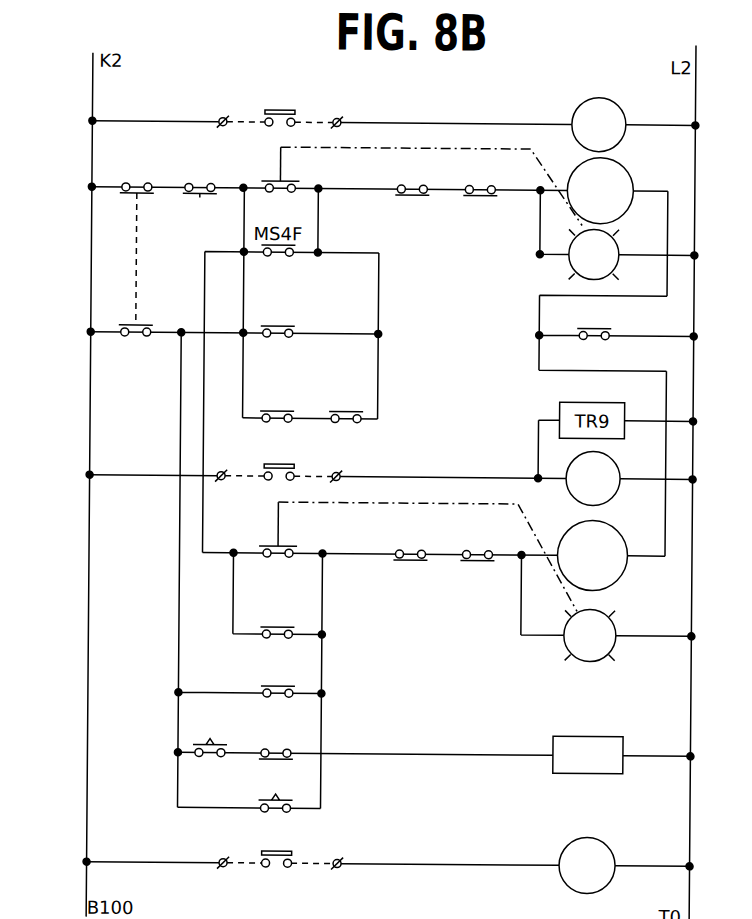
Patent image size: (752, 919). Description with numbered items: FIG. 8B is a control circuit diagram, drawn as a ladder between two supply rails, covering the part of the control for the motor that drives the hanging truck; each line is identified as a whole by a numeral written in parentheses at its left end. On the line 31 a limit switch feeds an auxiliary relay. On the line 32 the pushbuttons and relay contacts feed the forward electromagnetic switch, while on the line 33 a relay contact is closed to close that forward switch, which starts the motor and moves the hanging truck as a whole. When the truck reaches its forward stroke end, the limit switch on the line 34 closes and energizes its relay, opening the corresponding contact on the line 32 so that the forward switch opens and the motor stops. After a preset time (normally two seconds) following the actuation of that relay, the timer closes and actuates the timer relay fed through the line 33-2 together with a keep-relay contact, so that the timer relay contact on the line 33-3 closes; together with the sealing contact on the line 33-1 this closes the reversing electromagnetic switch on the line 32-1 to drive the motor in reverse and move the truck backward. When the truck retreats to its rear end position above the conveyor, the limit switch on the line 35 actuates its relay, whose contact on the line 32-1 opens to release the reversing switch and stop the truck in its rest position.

The line 31 is at (370, 119).
The line 32 is at (369, 237).
The line 33 is at (367, 423).
The line 34 is at (368, 473).
The line 32-1 is at (354, 655).
The line 33-1 is at (170, 569).
The line 33-2 is at (354, 742).
The line 33-3 is at (167, 798).
The line 35 is at (365, 861).